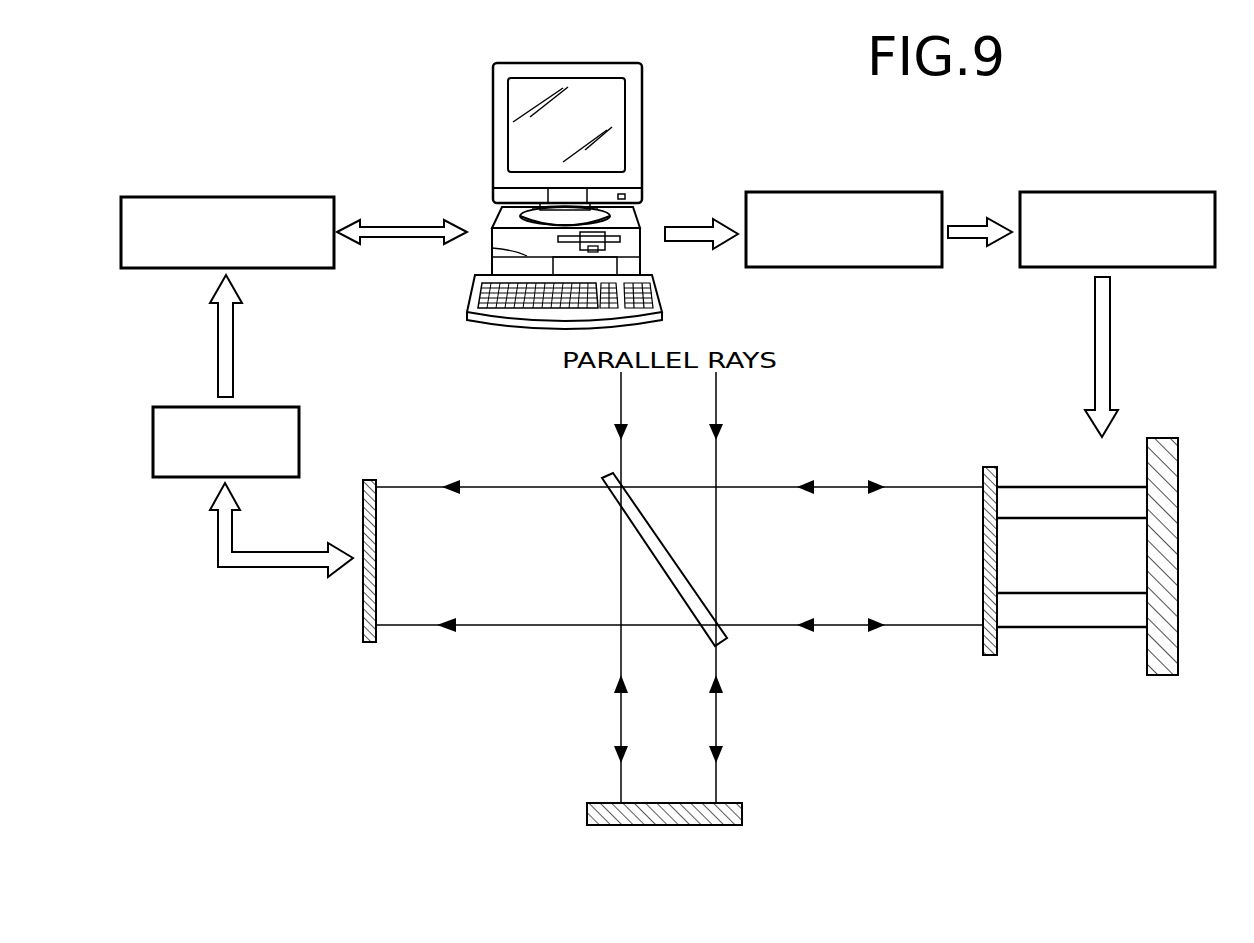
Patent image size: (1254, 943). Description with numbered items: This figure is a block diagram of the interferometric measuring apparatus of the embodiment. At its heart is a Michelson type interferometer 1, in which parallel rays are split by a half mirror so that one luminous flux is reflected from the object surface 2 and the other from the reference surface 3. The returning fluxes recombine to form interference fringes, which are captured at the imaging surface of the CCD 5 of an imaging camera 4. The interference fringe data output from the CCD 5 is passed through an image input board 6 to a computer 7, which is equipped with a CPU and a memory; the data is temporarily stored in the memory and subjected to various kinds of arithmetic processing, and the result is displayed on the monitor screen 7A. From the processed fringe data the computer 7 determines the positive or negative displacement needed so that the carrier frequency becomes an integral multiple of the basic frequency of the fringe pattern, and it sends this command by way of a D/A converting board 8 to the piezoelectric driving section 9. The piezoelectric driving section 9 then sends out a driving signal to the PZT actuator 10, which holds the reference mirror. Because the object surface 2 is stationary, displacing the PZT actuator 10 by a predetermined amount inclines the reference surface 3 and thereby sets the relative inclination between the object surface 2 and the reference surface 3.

The Michelson type interferometer 1 is at (572, 456).
The object surface 2 is at (737, 803).
The reference surface 3 is at (982, 638).
The imaging camera 4 is at (173, 481).
The CCD 5 is at (371, 643).
The image input board 6 is at (292, 196).
The computer 7 is at (493, 100).
The monitor screen 7A is at (523, 138).
The D/A converting board 8 is at (904, 191).
The piezoelectric driving section 9 is at (1165, 191).
The PZT actuator 10 is at (1046, 460).